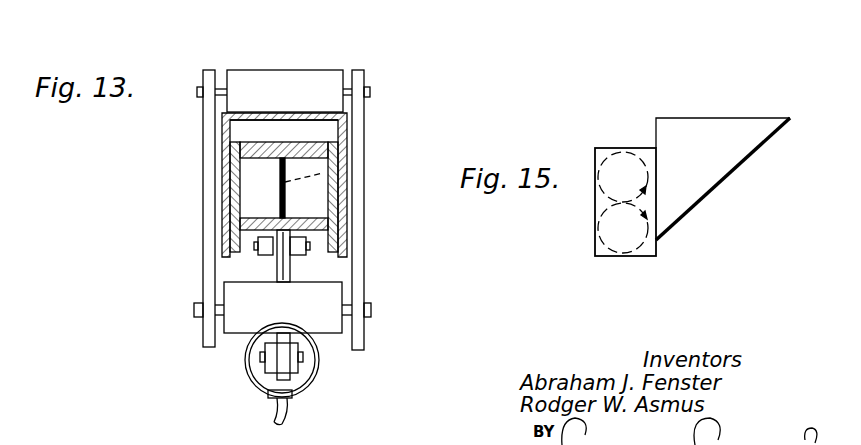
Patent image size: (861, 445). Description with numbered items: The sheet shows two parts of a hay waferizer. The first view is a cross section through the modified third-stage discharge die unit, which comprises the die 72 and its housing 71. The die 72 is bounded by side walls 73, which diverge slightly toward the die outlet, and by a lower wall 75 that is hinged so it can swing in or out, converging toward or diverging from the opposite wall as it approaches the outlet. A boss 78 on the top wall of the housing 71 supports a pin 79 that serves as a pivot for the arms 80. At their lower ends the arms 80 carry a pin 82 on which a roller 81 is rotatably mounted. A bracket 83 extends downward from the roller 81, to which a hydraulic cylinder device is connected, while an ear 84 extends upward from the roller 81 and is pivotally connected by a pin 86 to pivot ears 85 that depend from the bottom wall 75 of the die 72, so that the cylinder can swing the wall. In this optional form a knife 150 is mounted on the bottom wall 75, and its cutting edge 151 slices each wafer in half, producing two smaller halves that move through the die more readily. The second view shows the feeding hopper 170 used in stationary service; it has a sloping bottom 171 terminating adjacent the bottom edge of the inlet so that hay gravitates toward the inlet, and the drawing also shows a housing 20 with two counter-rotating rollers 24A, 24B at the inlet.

In FIG. 13, the housing 71 is at (263, 112).
In FIG. 13, the die 72 is at (220, 143).
In FIG. 13, the side walls 73 is at (228, 178).
In FIG. 13, the lower wall 75 is at (320, 219).
In FIG. 13, the boss 78 is at (323, 82).
In FIG. 13, the pin 79 is at (196, 92).
In FIG. 13, the arms 80 is at (201, 263).
In FIG. 13, the roller 81 is at (330, 333).
In FIG. 13, the pin 82 is at (371, 311).
In FIG. 13, the bracket 83 is at (280, 362).
In FIG. 13, the ear 84 is at (282, 266).
In FIG. 13, the pivot ears 85 is at (258, 248).
In FIG. 13, the pin 86 is at (306, 242).
In FIG. 13, the knife 150 is at (287, 165).
In FIG. 13, the cutting edge 151 is at (355, 163).
In FIG. 15, the roller housing 20 is at (637, 148).
In FIG. 15, the roller 24A is at (617, 165).
In FIG. 15, the roller 24B is at (617, 243).
In FIG. 15, the hopper 170 is at (715, 130).
In FIG. 15, the sloping bottom 171 is at (699, 203).